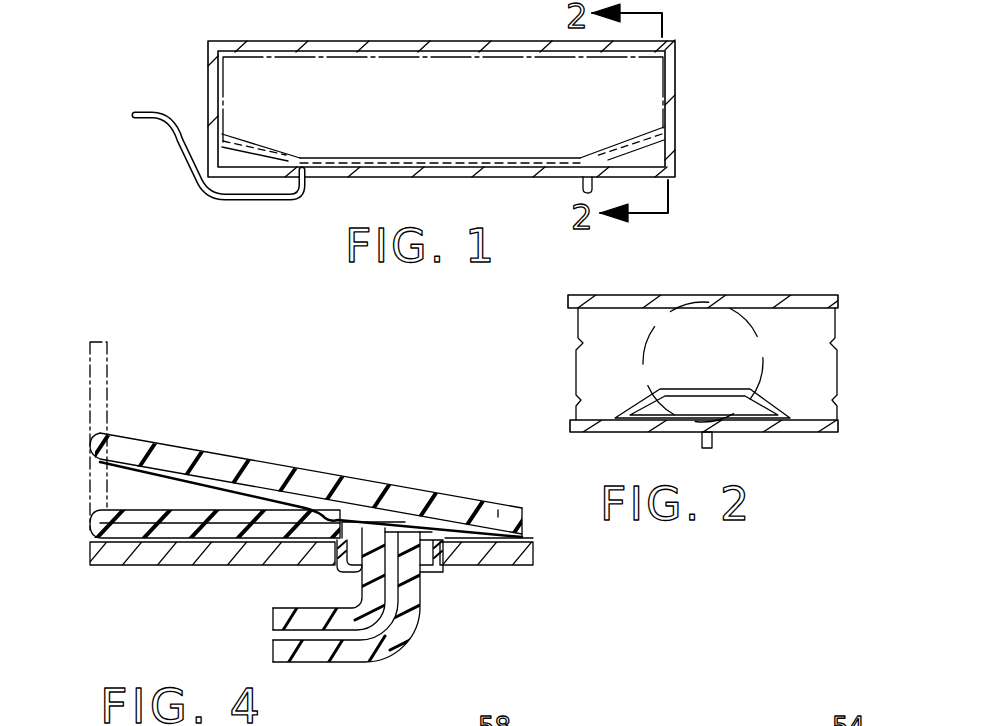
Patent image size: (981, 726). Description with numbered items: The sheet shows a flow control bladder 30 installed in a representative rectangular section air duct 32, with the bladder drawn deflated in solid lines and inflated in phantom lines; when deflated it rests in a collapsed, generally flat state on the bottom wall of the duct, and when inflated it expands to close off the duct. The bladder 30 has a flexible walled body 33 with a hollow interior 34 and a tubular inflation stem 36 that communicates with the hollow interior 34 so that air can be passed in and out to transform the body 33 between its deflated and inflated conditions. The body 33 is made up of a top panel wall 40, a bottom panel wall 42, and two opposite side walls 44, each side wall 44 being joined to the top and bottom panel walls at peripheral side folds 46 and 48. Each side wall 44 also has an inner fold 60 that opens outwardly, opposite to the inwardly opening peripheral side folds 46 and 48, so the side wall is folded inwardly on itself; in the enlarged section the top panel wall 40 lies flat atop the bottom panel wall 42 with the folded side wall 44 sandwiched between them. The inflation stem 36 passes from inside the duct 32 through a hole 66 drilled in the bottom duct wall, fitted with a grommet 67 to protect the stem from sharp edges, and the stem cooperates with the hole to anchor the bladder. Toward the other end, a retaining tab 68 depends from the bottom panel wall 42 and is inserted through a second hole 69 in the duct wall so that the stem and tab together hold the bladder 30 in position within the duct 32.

In FIG. 1, the flow control bladder 30 is at (486, 145).
In FIG. 2, the flow control bladder 30 is at (786, 402).
In FIG. 1, the rectangular section air duct 32 is at (218, 64).
In FIG. 1, the flexible walled body 33 is at (434, 156).
In FIG. 4, the flexible walled body 33 is at (413, 489).
In FIG. 4, the hollow interior 34 is at (340, 505).
In FIG. 1, the tubular inflation stem 36 is at (256, 203).
In FIG. 2, the tubular inflation stem 36 is at (712, 442).
In FIG. 4, the tubular inflation stem 36 is at (330, 662).
In FIG. 2, the top panel wall 40 is at (690, 392).
In FIG. 4, the top panel wall 40 is at (499, 512).
In FIG. 2, the bottom panel wall 42 is at (752, 430).
In FIG. 4, the bottom panel wall 42 is at (522, 538).
In FIG. 1, the side wall 44 is at (222, 153).
In FIG. 2, the side wall 44 is at (680, 412).
In FIG. 4, the side wall 44 is at (143, 473).
In FIG. 4, the peripheral side fold 46 is at (95, 448).
In FIG. 4, the peripheral side fold 48 is at (92, 545).
In FIG. 4, the inner fold 60 is at (322, 500).
In FIG. 4, the hole 66 is at (357, 560).
In FIG. 4, the grommet 67 is at (427, 572).
In FIG. 1, the retaining tab 68 is at (592, 185).
In FIG. 1, the hole 69 is at (584, 185).